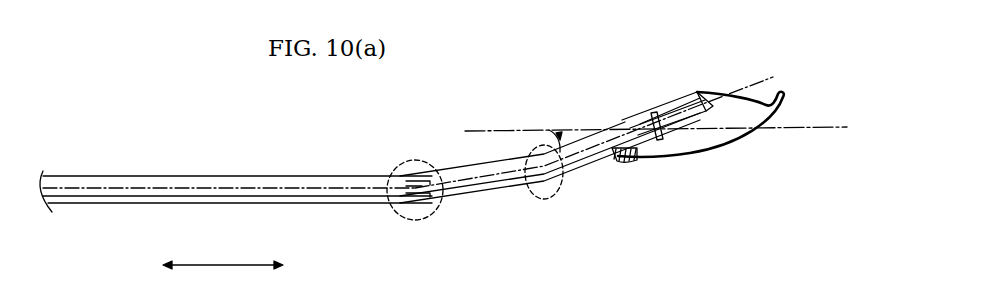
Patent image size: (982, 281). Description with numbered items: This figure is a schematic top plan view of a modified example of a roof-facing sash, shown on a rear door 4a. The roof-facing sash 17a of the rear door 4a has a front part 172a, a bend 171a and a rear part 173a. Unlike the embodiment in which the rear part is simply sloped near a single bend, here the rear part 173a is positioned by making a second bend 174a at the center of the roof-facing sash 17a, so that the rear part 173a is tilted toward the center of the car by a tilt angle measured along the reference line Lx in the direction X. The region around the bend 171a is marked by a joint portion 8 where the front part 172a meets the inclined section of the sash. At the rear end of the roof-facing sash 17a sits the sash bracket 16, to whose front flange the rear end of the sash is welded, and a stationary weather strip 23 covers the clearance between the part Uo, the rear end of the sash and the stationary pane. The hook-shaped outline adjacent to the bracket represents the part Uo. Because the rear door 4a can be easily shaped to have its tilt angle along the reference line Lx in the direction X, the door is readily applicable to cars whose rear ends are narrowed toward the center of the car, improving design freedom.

The rear door 4a is at (146, 138).
The roof-facing sash 17a is at (270, 171).
The bend 171a is at (417, 158).
The front part 172a is at (138, 205).
The rear part 173a is at (487, 186).
The second bend 174a is at (553, 188).
The joint / connecting member 8 is at (413, 221).
The sash bracket 16 is at (697, 92).
The stationary weather strip 23 is at (620, 163).
The reference line Lx is at (500, 127).
The part Uo is at (682, 158).
The direction X is at (231, 263).